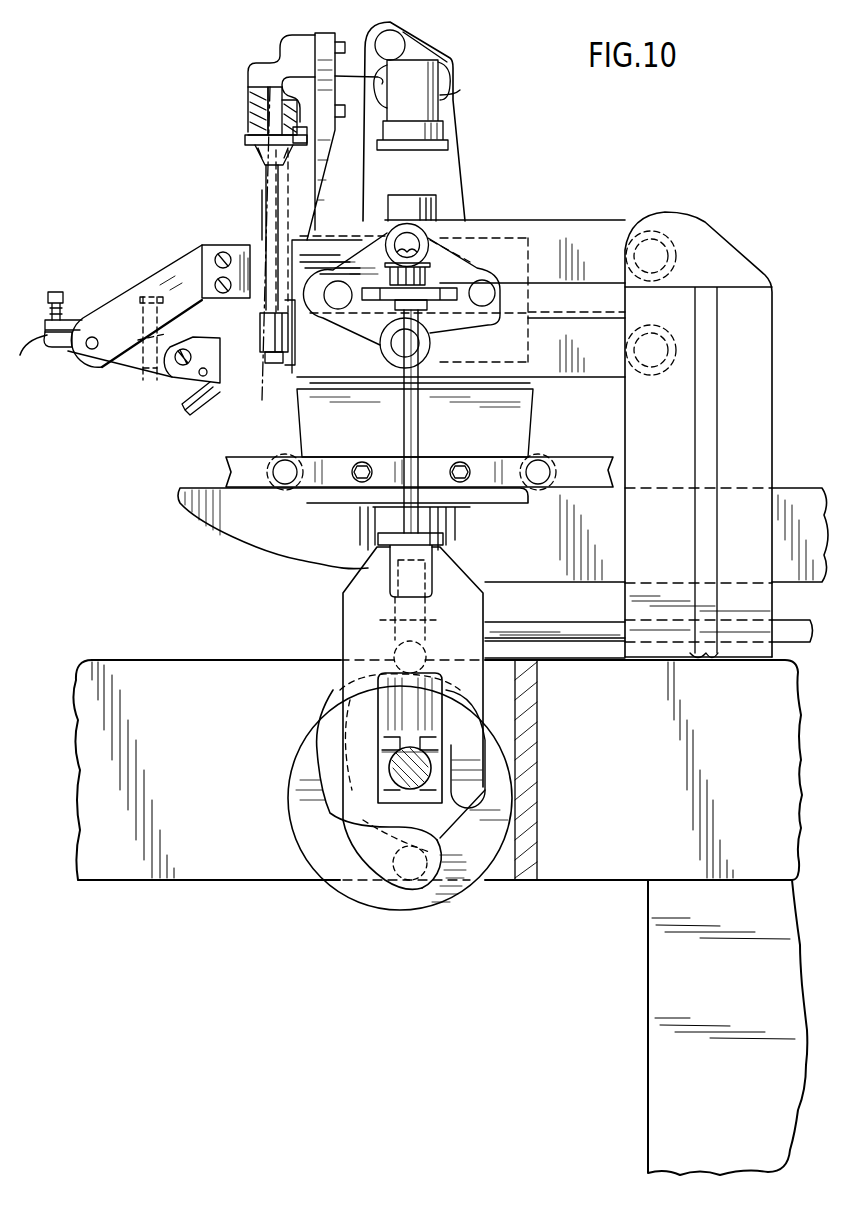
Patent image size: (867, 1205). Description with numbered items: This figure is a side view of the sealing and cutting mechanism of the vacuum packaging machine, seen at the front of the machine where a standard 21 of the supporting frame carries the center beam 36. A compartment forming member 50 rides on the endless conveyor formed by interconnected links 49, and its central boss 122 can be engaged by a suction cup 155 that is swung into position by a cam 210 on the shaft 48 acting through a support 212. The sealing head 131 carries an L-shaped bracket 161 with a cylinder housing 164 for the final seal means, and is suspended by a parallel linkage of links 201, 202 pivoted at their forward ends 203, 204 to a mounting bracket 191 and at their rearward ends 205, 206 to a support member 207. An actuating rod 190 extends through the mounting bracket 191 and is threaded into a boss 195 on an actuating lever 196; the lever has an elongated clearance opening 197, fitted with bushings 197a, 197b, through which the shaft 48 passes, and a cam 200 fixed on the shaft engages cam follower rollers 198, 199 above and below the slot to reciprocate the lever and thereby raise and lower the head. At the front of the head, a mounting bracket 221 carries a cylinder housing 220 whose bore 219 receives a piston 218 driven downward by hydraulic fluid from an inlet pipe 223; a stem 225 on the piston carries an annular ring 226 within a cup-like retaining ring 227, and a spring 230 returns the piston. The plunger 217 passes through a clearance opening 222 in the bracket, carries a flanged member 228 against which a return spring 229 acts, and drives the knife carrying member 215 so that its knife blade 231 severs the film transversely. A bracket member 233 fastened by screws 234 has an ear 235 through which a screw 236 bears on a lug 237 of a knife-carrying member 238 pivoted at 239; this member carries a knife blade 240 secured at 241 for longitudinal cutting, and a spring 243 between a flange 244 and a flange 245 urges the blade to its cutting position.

The standard 21 is at (658, 997).
The center beam 36 is at (612, 811).
The shaft 48 is at (400, 776).
The link 49 is at (577, 470).
The compartment forming member 50 is at (528, 450).
The central boss 122 is at (478, 510).
The sealing head 131 is at (508, 203).
The suction cup 155 is at (380, 535).
The L-shaped bracket 161 is at (460, 162).
The cylinder housing 164 is at (430, 100).
The actuating rod 190 is at (404, 423).
The mounting bracket 191 is at (352, 270).
The internally threaded boss 195 is at (395, 585).
The actuating lever 196 is at (340, 618).
The elongated clearance opening 197 is at (385, 732).
The bushing 197a is at (442, 750).
The bushing 197b is at (395, 752).
The cam follower roller 198 is at (395, 655).
The cam follower roller 199 is at (398, 897).
The cam 200 is at (538, 703).
The link 201 is at (555, 222).
The link 202 is at (552, 324).
The forward end pivot 203 is at (386, 242).
The forward end pivot 204 is at (380, 343).
The rearward end pivot 205 is at (672, 243).
The rearward end pivot 206 is at (680, 350).
The support member 207 is at (773, 350).
The cam 210 is at (290, 778).
The support 212 is at (571, 631).
The knife carrying member 215 is at (260, 328).
The plunger 217 is at (270, 190).
The piston 218 is at (256, 108).
The bore 219 is at (256, 94).
The cylinder housing 220 is at (248, 70).
The mounting bracket 221 is at (266, 172).
The clearance opening 222 is at (262, 226).
The inlet pipe 223 is at (412, 105).
The stem 225 is at (246, 142).
The annular ring 226 is at (262, 157).
The cup-like retaining ring 227 is at (312, 133).
The flanged member 228 is at (308, 148).
The return spring 229 is at (258, 206).
The spring 230 is at (270, 120).
The knife blade 231 is at (278, 366).
The bracket member 233 is at (152, 268).
The screws 234 is at (218, 280).
The ear 235 is at (58, 320).
The screw 236 is at (57, 292).
The lug 237 is at (46, 355).
The knife-carrying member 238 is at (133, 371).
The pivot 239 is at (90, 352).
The knife blade 240 is at (184, 404).
The securing point 241 is at (184, 348).
The spring 243 is at (145, 325).
The flange 244 is at (154, 298).
The flange 245 is at (156, 385).